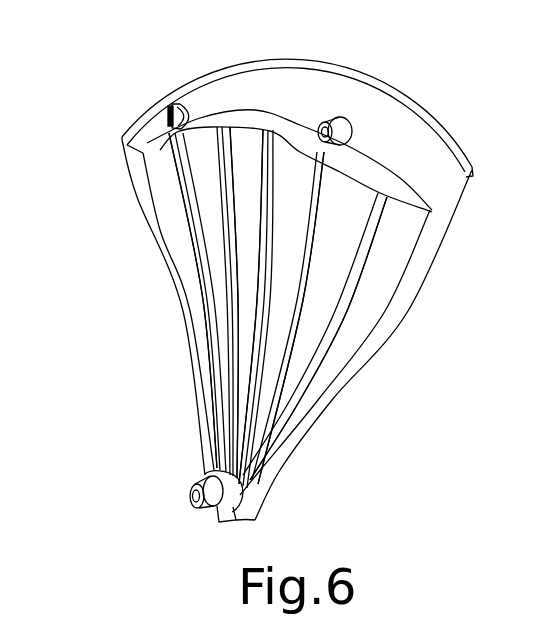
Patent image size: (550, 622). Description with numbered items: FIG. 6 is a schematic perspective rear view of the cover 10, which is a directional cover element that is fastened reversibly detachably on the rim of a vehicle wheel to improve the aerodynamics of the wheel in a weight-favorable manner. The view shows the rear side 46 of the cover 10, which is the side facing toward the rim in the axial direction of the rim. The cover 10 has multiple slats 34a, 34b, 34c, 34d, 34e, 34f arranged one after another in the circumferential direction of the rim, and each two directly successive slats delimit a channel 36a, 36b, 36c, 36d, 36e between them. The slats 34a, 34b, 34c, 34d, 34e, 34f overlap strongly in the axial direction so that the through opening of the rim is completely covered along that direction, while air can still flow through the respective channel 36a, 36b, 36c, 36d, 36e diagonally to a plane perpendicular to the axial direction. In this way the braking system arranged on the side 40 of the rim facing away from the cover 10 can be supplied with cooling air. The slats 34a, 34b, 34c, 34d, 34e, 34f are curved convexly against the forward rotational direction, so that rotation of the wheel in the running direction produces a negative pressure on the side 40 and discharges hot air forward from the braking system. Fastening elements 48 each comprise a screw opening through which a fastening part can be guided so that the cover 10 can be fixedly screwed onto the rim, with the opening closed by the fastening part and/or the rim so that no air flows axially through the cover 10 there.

The cover 10 is at (471, 137).
The side of the rim facing away from the cover 40 is at (118, 307).
The slat 34a is at (163, 227).
The slat 34b is at (197, 163).
The slat 34c is at (245, 160).
The slat 34d is at (290, 163).
The slat 34e is at (348, 200).
The slat 34f is at (372, 293).
The channel 36a is at (192, 290).
The channel 36b is at (224, 340).
The channel 36c is at (237, 399).
The channel 36d is at (278, 417).
The channel 36e is at (276, 469).
The rear side of the cover 46 is at (348, 333).
The fastening element 48 is at (166, 94).